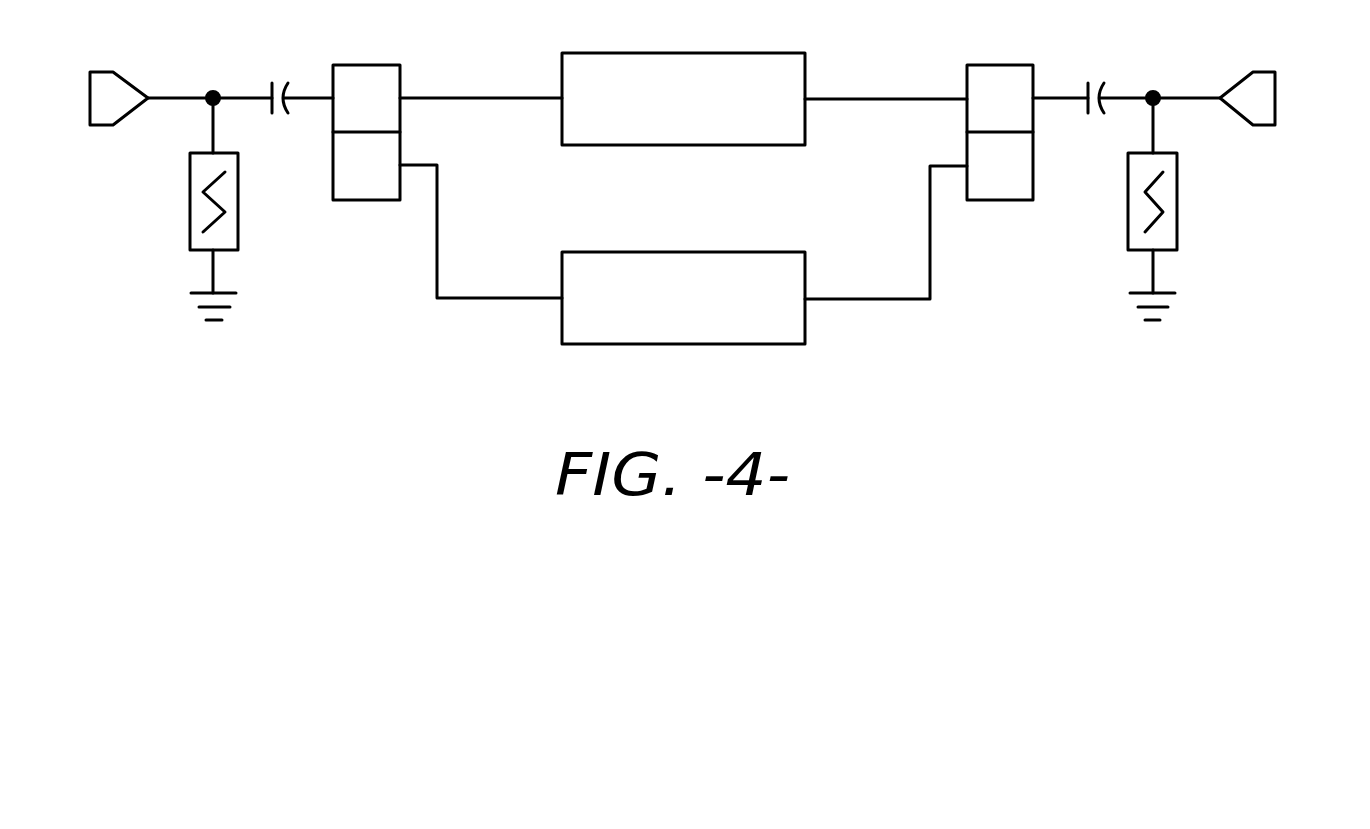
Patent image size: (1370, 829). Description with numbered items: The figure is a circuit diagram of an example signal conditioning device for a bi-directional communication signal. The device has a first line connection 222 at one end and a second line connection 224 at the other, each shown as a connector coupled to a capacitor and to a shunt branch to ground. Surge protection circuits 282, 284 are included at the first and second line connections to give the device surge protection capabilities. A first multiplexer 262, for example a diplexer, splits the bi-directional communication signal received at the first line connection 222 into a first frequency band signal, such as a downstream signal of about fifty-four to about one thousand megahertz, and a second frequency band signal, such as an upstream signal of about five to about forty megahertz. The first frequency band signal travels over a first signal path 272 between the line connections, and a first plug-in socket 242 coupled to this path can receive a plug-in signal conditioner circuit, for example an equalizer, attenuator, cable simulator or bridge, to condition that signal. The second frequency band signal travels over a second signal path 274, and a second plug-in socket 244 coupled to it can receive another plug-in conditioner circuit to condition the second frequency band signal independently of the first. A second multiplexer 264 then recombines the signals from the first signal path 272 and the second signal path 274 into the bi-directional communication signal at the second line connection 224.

The first line connection 222 is at (105, 72).
The second line connection 224 is at (1265, 72).
The first plug-in socket 242 is at (723, 53).
The second plug-in socket 244 is at (728, 252).
The first multiplexer 262 is at (360, 65).
The second multiplexer 264 is at (1013, 65).
The first signal path 272 is at (433, 98).
The second signal path 274 is at (495, 298).
The surge protection circuit 282 is at (190, 227).
The surge protection circuit 284 is at (1178, 225).